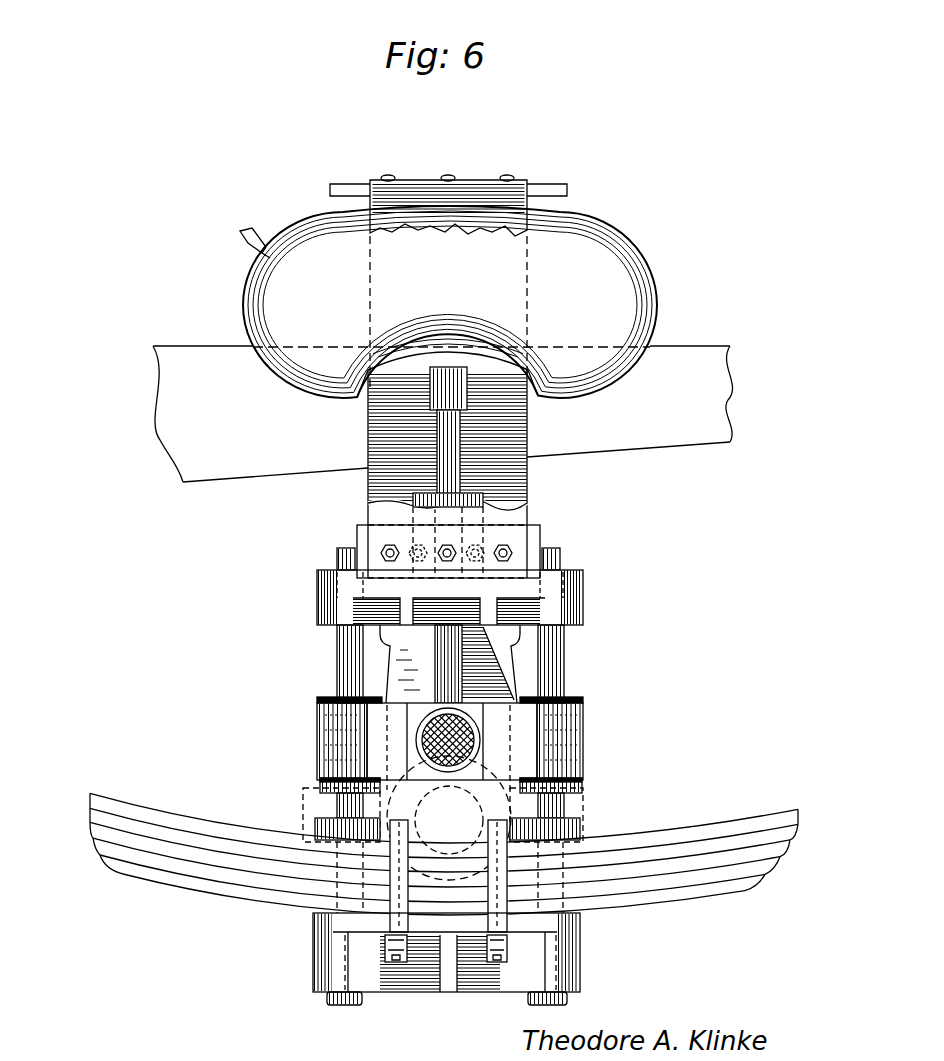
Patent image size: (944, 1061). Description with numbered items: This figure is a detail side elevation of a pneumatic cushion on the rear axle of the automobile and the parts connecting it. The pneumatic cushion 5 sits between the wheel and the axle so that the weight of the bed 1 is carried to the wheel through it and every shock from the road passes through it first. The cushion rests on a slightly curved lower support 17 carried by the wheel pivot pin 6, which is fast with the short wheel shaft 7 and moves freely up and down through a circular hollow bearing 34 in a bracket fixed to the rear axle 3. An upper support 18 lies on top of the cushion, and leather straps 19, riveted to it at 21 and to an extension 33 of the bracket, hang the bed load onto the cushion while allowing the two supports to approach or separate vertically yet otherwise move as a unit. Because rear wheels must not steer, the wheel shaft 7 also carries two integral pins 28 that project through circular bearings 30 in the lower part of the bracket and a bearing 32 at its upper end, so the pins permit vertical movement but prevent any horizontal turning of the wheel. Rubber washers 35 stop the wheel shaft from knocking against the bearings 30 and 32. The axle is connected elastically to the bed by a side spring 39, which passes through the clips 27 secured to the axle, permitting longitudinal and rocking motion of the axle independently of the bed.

The body of the bed of the car 1 is at (655, 435).
The rear axle 3 is at (545, 815).
The pneumatic cushion 5 is at (625, 270).
The wheel pivot pin 6 is at (370, 440).
The wheel shaft 7 is at (480, 750).
The lower support 17 is at (530, 395).
The upper support 18 is at (545, 190).
The straps 19 is at (527, 233).
The rivets 21 is at (507, 176).
The clips 27 is at (497, 895).
The pins 28 is at (350, 660).
The circular bearings 30 is at (300, 825).
The bearing 32 is at (320, 600).
The extension 33 is at (497, 592).
The circular hollow bearing 34 is at (485, 500).
The rubber washers 35 is at (325, 700).
The side spring 39 is at (280, 902).